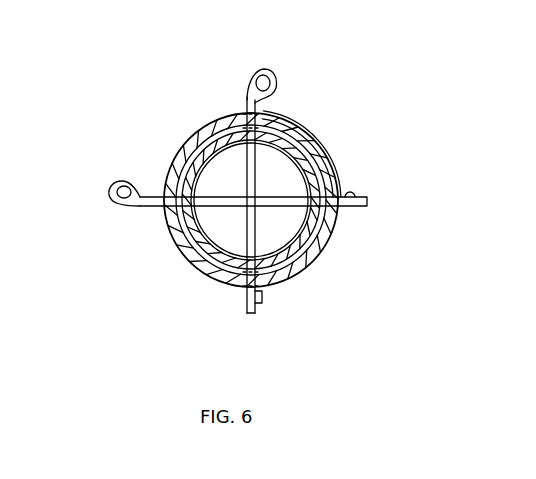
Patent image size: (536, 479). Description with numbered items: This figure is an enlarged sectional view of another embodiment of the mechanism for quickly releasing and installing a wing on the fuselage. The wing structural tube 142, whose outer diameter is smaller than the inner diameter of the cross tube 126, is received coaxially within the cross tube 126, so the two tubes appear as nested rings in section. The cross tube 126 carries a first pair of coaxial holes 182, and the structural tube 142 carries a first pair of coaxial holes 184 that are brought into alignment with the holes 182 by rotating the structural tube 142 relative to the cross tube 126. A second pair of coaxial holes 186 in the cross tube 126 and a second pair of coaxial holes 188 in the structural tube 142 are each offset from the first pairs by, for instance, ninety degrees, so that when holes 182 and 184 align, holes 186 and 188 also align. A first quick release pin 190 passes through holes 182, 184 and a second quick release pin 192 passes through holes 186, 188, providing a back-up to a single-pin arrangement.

The cross tube 126 is at (322, 145).
The structural tube 142 is at (210, 270).
The first pair of coaxial holes 182 is at (175, 180).
The first pair of coaxial holes 184 is at (183, 248).
The second pair of coaxial holes 186 is at (280, 116).
The second pair of coaxial holes 188 is at (228, 119).
The first quick release pin 190 is at (120, 204).
The second quick release pin 192 is at (268, 69).